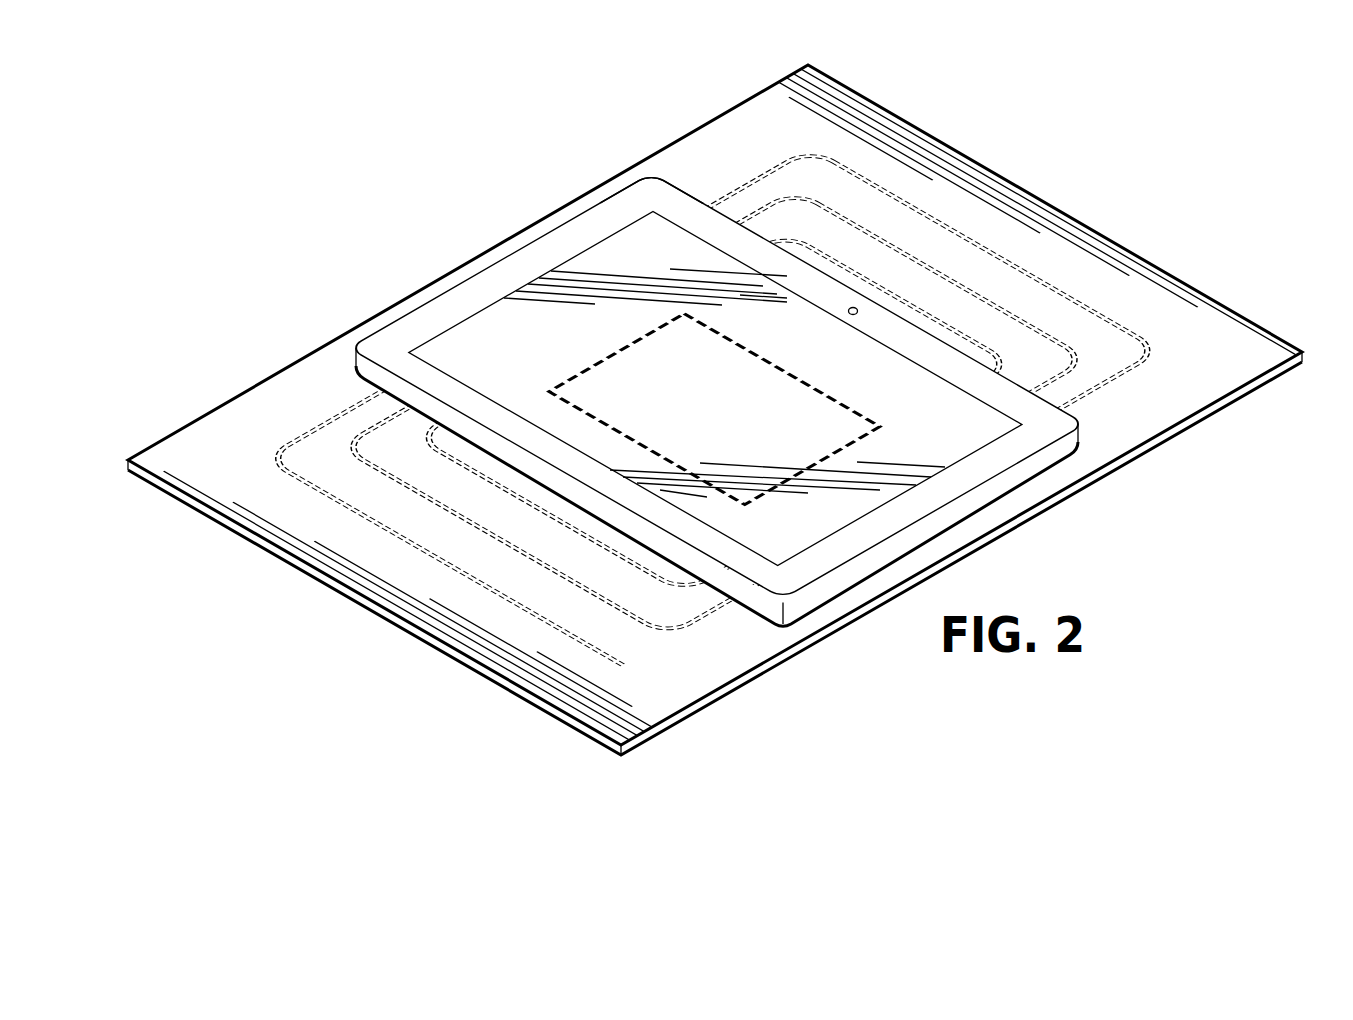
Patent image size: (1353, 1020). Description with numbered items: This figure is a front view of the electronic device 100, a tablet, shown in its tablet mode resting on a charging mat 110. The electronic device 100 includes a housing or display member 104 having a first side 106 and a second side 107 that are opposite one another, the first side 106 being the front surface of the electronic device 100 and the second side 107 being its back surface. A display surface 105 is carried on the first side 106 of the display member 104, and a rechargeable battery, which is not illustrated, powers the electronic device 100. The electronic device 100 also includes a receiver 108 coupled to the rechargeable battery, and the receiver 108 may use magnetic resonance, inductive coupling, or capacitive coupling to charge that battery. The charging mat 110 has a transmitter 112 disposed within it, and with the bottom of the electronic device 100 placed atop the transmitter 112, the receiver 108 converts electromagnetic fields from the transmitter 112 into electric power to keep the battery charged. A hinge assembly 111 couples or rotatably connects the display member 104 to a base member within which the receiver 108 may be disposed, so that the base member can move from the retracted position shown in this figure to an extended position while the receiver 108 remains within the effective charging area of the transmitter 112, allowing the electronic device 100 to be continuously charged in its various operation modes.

The electronic device 100 is at (488, 231).
The display member 104 is at (655, 176).
The display surface 105 is at (721, 390).
The first side 106 is at (432, 320).
The second side 107 is at (1013, 487).
The receiver 108 is at (615, 350).
The charging mat 110 is at (1058, 207).
The hinge assembly 111 is at (353, 357).
The transmitter 112 is at (278, 462).